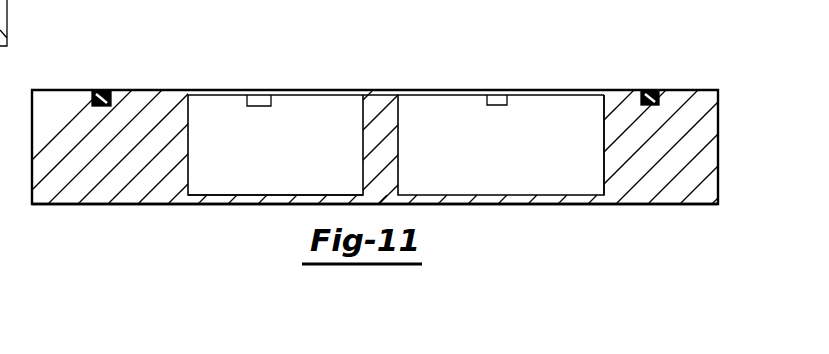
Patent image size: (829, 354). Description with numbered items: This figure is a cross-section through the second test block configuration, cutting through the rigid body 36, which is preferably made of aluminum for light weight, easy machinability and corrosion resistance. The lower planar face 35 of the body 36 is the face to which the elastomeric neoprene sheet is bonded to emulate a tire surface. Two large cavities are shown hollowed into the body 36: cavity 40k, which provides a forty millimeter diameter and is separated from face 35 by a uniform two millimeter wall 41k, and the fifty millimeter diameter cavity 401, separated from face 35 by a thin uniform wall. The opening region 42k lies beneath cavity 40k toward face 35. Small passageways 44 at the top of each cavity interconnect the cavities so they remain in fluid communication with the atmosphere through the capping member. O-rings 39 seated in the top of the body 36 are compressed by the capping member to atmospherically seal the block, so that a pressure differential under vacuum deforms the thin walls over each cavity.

The body 36 is at (704, 102).
The planar face 35 is at (139, 205).
The O-ring 39 is at (99, 91).
The passageways 44 is at (262, 101).
The cavity 40k is at (232, 176).
The wall 41k is at (258, 199).
The second cavity 42k is at (462, 200).
The cavity 401 is at (578, 174).